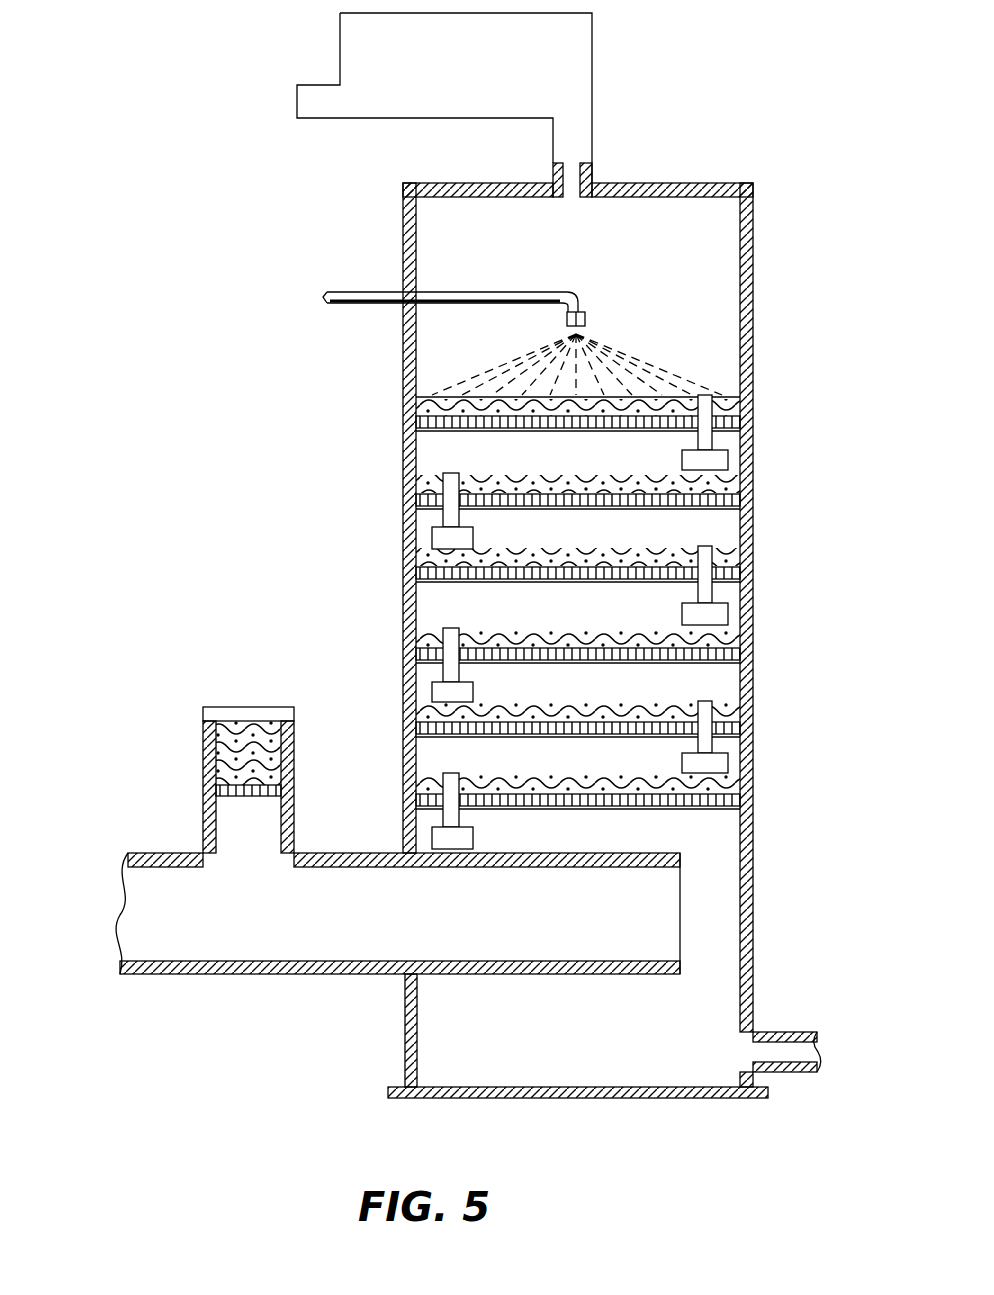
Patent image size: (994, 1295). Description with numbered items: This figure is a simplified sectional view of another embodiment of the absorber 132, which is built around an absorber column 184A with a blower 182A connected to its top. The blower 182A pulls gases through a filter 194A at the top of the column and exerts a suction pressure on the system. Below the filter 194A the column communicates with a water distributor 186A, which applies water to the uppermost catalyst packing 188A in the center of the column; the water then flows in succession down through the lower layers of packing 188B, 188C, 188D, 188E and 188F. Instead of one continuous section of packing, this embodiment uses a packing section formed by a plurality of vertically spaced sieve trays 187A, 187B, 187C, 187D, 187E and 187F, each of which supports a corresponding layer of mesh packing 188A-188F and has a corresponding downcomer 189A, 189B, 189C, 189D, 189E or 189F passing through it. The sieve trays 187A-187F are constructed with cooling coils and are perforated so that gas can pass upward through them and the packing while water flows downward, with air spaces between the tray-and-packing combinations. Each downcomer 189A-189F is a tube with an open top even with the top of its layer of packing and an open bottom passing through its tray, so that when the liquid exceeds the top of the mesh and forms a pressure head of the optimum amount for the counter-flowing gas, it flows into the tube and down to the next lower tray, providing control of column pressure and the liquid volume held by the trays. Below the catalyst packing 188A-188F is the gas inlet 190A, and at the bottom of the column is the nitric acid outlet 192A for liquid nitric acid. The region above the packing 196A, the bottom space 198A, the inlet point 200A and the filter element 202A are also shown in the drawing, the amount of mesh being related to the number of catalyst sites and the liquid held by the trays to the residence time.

The absorber 132 is at (858, 200).
The blower 182A is at (560, 57).
The absorber column 184A is at (753, 331).
The water distributor 186A is at (465, 293).
The sieve tray 187A is at (416, 423).
The sieve tray 187B is at (416, 507).
The sieve tray 187C is at (416, 587).
The sieve tray 187D is at (416, 660).
The sieve tray 187E is at (416, 733).
The sieve tray 187F is at (416, 807).
The layer of mesh packing 188A is at (753, 400).
The layer of mesh packing 188B is at (753, 485).
The layer of mesh packing 188C is at (753, 558).
The layer of mesh packing 188D is at (753, 638).
The layer of mesh packing 188E is at (753, 708).
The layer of mesh packing 188F is at (753, 778).
The downcomer 189A is at (700, 436).
The downcomer 189B is at (455, 520).
The downcomer 189C is at (700, 600).
The downcomer 189D is at (455, 675).
The downcomer 189E is at (700, 745).
The downcomer 189F is at (455, 820).
The gas inlet 190A is at (283, 988).
The nitric acid outlet 192A is at (787, 1032).
The filter 194A is at (570, 178).
The upper chamber 196A is at (720, 278).
The lower chamber 198A is at (610, 1047).
The feed duct 200A is at (160, 898).
The hopper 202A is at (238, 722).